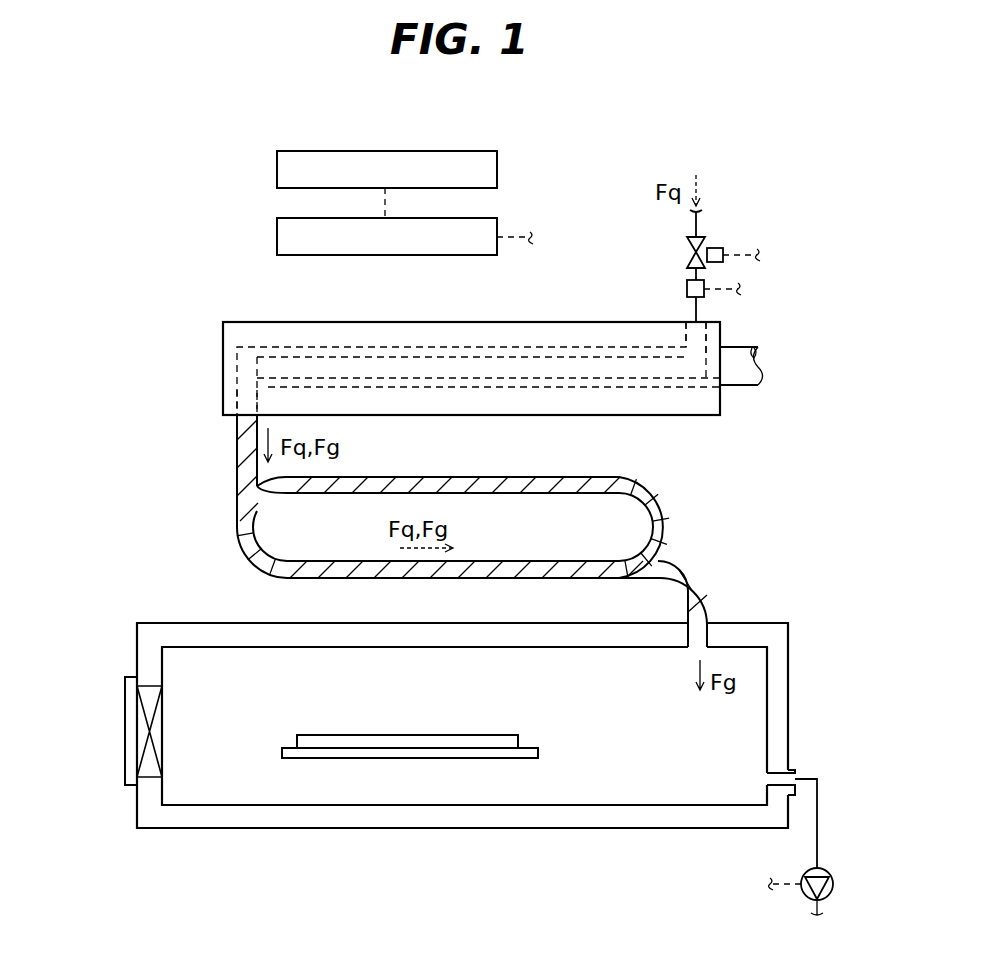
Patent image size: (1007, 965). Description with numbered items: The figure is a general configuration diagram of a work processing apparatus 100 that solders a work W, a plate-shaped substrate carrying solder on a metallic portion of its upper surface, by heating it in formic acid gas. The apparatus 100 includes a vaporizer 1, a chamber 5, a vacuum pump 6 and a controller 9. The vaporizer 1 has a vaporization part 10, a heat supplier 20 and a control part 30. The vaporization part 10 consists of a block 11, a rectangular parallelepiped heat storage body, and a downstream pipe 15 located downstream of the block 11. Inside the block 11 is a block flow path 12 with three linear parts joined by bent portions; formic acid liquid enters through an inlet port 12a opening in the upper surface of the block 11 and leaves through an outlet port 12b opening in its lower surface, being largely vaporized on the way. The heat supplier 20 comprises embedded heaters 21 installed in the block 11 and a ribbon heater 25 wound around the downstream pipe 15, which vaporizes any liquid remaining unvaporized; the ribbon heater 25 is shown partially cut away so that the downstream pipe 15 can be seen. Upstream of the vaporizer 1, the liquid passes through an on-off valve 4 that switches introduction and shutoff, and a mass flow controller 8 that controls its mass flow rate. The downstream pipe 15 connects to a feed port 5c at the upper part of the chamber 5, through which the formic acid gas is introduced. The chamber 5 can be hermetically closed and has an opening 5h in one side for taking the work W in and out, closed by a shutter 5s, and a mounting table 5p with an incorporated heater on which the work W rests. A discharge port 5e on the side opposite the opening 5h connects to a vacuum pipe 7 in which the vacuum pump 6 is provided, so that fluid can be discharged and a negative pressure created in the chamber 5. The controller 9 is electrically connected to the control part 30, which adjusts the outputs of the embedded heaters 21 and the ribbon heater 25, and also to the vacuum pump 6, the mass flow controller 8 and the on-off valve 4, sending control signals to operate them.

The vaporizer 1 is at (196, 559).
The work processing apparatus 100 is at (277, 170).
The controller 9 is at (440, 151).
The control part 30 is at (426, 255).
The vaporization part 10 is at (377, 399).
The block 11 is at (223, 360).
The block flow path 12 is at (257, 356).
The inlet port 12a is at (690, 322).
The outlet port 12b is at (240, 418).
The downstream pipe 15 is at (237, 545).
The on-off valve 4 is at (706, 250).
The mass flow controller 8 is at (706, 297).
The heat supplier 20 is at (525, 497).
The embedded heater 21 is at (732, 382).
The ribbon heater 25 is at (502, 558).
The chamber 5 is at (137, 655).
The feed port 5c is at (707, 650).
The discharge port 5e is at (775, 777).
The opening 5h is at (176, 752).
The shutter 5s is at (128, 745).
The mounting table 5p is at (538, 758).
The vacuum pipe 7 is at (818, 800).
The vacuum pump 6 is at (830, 878).
The work W is at (417, 735).